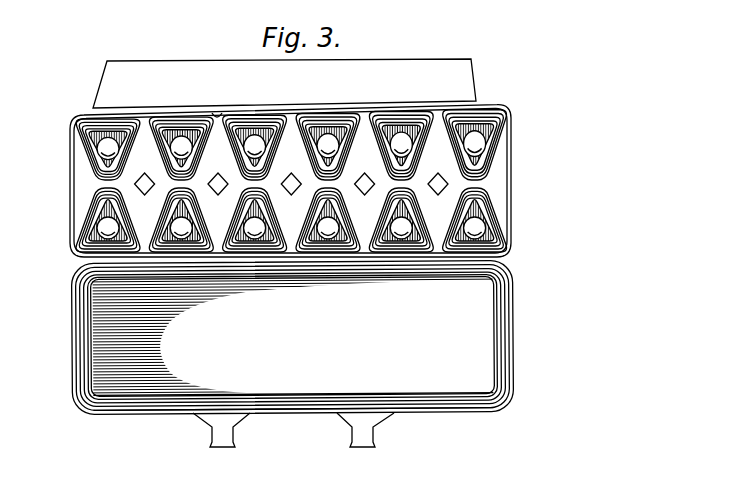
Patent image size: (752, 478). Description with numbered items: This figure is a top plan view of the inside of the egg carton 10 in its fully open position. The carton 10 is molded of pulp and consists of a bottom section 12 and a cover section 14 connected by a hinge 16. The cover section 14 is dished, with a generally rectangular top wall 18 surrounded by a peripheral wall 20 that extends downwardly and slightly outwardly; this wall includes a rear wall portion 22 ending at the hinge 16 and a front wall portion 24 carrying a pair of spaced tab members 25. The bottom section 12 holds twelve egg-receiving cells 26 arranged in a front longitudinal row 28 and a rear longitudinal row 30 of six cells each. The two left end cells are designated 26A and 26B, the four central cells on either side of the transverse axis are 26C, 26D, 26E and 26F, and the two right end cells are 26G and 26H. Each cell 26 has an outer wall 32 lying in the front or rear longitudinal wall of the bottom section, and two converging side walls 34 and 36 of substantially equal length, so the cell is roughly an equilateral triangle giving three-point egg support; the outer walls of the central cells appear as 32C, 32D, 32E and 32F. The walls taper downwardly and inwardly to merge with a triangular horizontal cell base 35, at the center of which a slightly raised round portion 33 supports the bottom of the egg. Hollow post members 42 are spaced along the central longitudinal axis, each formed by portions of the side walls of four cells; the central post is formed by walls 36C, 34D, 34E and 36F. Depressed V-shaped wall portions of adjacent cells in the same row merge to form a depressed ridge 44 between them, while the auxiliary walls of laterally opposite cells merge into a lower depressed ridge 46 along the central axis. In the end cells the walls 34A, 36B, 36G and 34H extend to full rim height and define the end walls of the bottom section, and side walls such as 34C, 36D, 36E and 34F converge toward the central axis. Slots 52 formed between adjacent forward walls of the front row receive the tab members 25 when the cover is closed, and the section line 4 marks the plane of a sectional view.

The section line 4- 4 is at (217, 127).
The egg carton 10 is at (62, 296).
The bottom section 12 is at (66, 223).
The cover section 14 is at (70, 346).
The hinge 16 is at (92, 263).
The top wall 18 is at (319, 346).
The peripheral wall 20 is at (333, 392).
The rear wall portion 22 is at (413, 272).
The front wall portion 24 is at (299, 402).
The tab members 25 is at (214, 436).
The egg-receiving cells 26 is at (258, 125).
The end cell 26A is at (89, 116).
The end cell 26B is at (73, 247).
The central cell 26C is at (284, 118).
The central cell 26D is at (255, 249).
The central cell 26E is at (342, 104).
The central cell 26F is at (352, 250).
The end cell 26G is at (506, 118).
The end cell 26H is at (506, 240).
The front longitudinal row 28 is at (513, 146).
The rear longitudinal row 30 is at (513, 219).
The outer cell wall 32 is at (168, 120).
The outer cell wall 32C is at (265, 117).
The outer cell wall 32D is at (262, 246).
The outer cell wall 32E is at (352, 112).
The outer cell wall 32F is at (340, 252).
The round portion 33 is at (181, 128).
The side cell wall 34 is at (200, 250).
The side cell wall 34A is at (82, 155).
The side cell wall 34C is at (243, 121).
The side cell wall 34D is at (282, 247).
The side cell wall 34E is at (296, 116).
The side cell wall 34F is at (378, 248).
The side cell wall 34H is at (497, 206).
The cell base 35 is at (113, 136).
The side cell wall 36 is at (201, 130).
The side cell wall 36B is at (82, 218).
The side cell wall 36C is at (254, 128).
The side cell wall 36D is at (240, 248).
The side cell wall 36E is at (383, 118).
The side cell wall 36F is at (310, 247).
The side cell wall 36G is at (501, 137).
The hollow post members 42 is at (493, 96).
The depressed ridge 44 is at (140, 124).
The depressed ridge 46 is at (487, 164).
The slots 52 is at (216, 116).